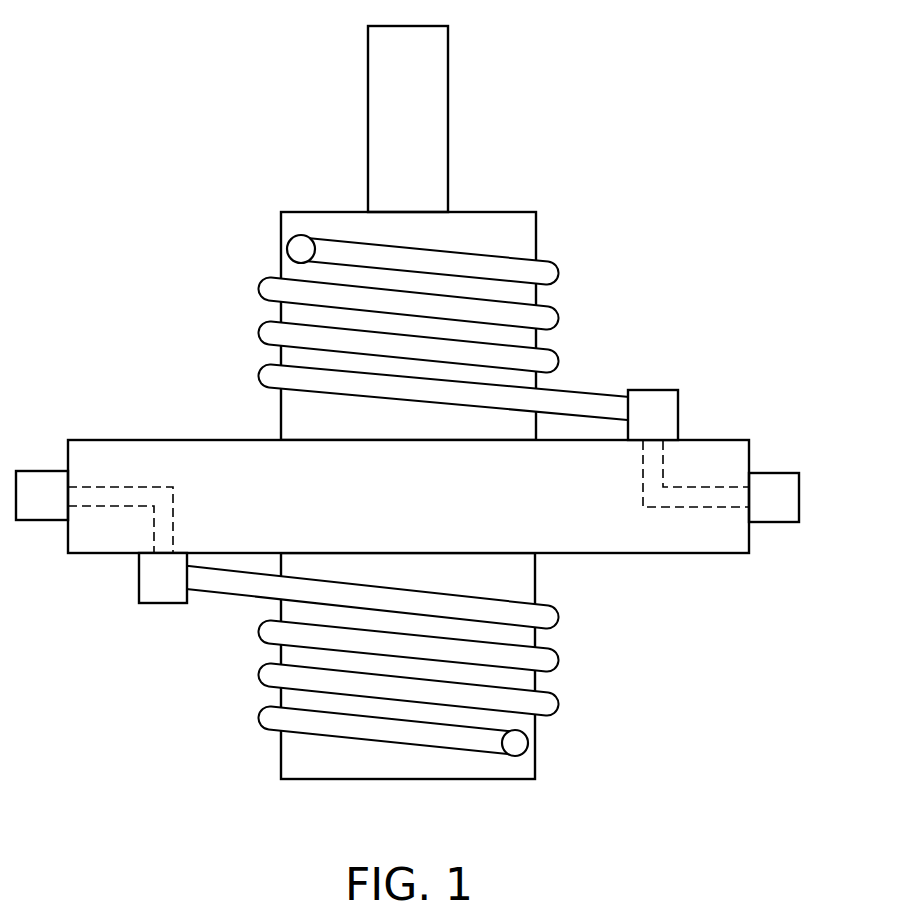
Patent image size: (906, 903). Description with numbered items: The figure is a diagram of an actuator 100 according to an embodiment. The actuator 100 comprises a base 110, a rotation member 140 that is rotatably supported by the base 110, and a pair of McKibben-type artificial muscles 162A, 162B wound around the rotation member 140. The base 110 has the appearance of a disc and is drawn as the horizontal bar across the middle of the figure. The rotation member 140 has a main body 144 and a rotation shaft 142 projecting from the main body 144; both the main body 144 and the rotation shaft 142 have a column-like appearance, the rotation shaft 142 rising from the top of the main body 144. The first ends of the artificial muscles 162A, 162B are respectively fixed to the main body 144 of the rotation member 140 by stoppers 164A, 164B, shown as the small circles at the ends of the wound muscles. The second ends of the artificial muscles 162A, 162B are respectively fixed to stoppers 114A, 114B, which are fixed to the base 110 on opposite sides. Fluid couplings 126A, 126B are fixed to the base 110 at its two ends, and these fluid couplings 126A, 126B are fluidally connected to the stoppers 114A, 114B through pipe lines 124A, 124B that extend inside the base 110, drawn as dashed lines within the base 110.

The actuator 100 is at (160, 100).
The base 110 is at (207, 453).
The stopper 114A is at (657, 395).
The stopper 114B is at (165, 597).
The pipe line 124A is at (688, 509).
The pipe line 124B is at (115, 486).
The fluid coupling 126A is at (774, 474).
The fluid coupling 126B is at (38, 522).
The rotation member 140 is at (550, 218).
The rotation shaft 142 is at (440, 73).
The main body 144 is at (490, 218).
The McKibben-type artificial muscle 162A is at (550, 319).
The McKibben-type artificial muscle 162B is at (268, 674).
The stopper 164A is at (297, 249).
The stopper 164B is at (518, 742).